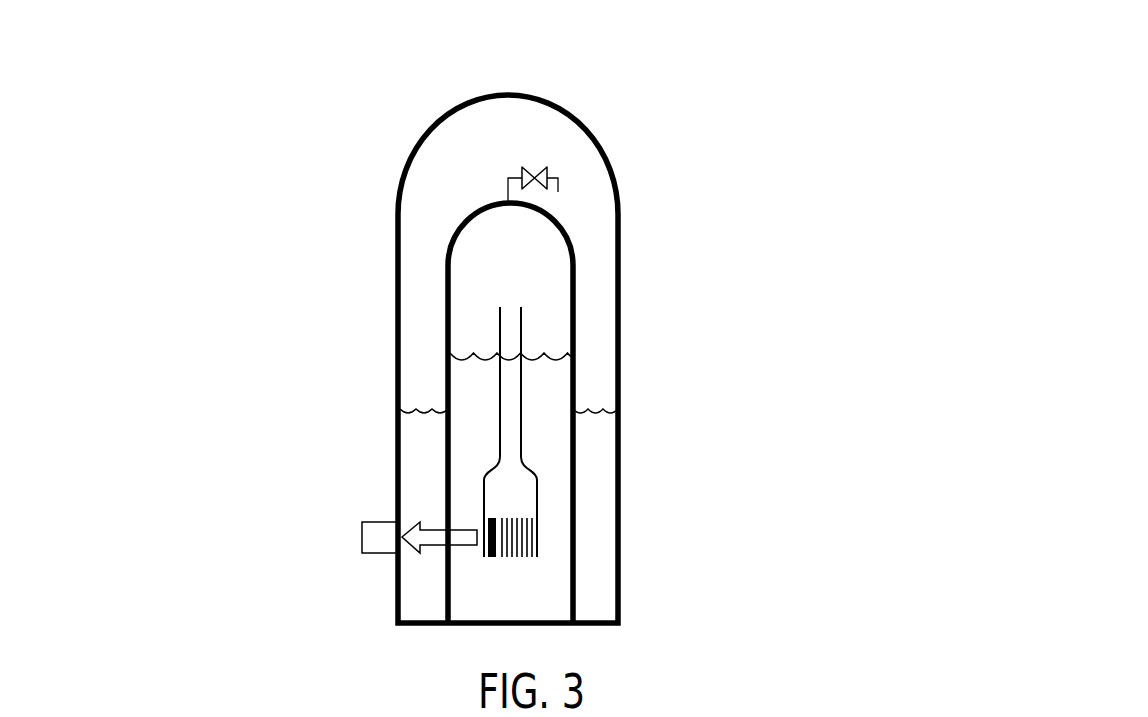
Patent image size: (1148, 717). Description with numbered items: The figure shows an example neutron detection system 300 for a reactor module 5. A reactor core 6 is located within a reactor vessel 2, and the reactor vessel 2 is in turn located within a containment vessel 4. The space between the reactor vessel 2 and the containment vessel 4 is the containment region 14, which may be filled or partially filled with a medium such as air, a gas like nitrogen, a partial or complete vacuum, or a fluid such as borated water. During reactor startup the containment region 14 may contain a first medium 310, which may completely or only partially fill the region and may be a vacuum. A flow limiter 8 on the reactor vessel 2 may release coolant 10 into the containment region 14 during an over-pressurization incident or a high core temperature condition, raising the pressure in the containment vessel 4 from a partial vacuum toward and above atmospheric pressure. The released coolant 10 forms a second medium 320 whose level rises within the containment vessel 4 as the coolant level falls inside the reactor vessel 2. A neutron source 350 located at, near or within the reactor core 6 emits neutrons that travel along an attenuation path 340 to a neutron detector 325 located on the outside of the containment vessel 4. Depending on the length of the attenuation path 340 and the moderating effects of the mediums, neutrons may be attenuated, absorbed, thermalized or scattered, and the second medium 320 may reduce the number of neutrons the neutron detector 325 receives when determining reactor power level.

The reactor vessel 2 is at (583, 282).
The containment vessel 4 is at (627, 215).
The reactor module 5 is at (382, 211).
The reactor core 6 is at (537, 522).
The flow limiter 8 is at (535, 165).
The coolant 10 is at (548, 379).
The containment region 14 is at (487, 167).
The neutron detection system 300 is at (236, 352).
The first medium 310 is at (418, 342).
The second medium 320 is at (597, 552).
The neutron detector 325 is at (355, 535).
The attenuation path 340 is at (435, 553).
The neutron source 350 is at (488, 533).